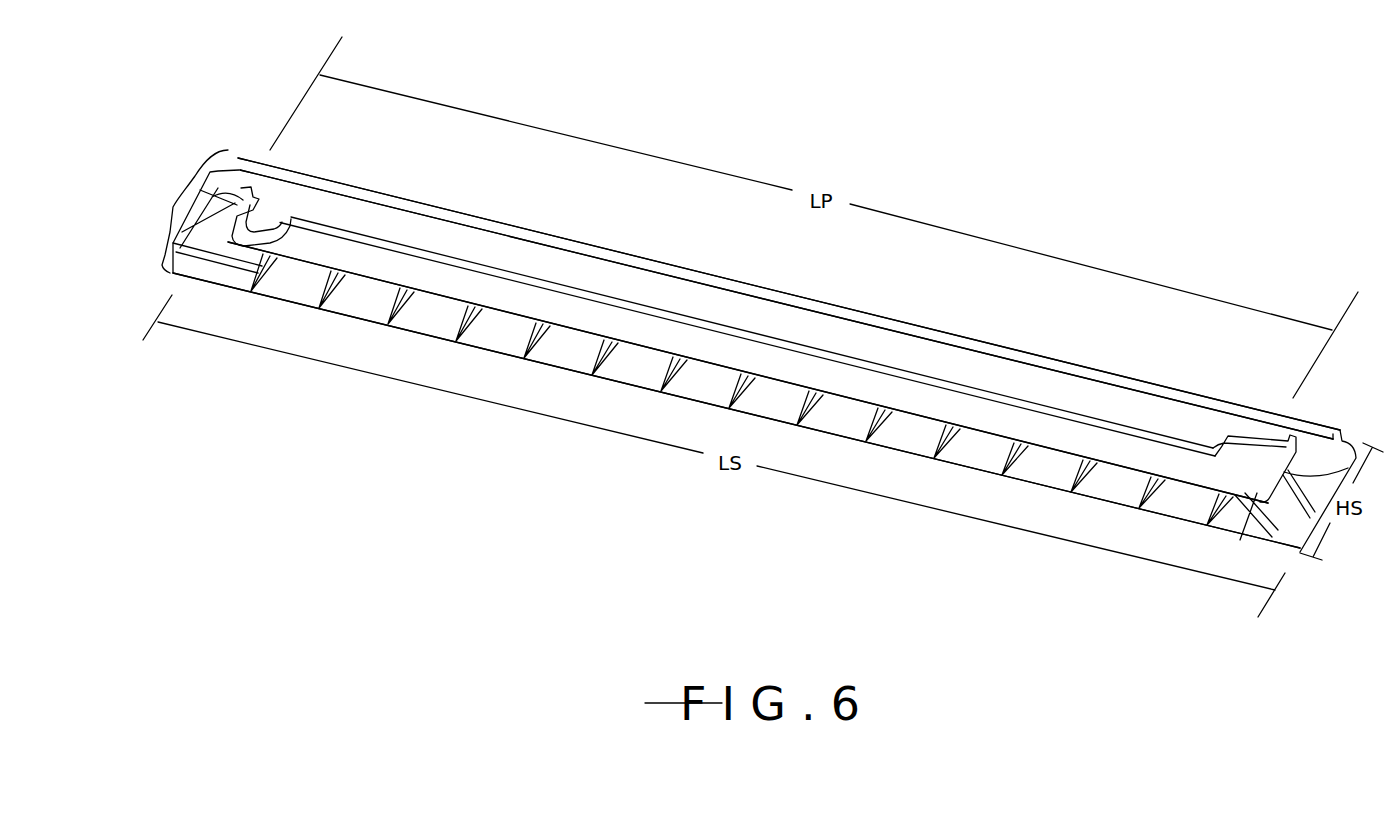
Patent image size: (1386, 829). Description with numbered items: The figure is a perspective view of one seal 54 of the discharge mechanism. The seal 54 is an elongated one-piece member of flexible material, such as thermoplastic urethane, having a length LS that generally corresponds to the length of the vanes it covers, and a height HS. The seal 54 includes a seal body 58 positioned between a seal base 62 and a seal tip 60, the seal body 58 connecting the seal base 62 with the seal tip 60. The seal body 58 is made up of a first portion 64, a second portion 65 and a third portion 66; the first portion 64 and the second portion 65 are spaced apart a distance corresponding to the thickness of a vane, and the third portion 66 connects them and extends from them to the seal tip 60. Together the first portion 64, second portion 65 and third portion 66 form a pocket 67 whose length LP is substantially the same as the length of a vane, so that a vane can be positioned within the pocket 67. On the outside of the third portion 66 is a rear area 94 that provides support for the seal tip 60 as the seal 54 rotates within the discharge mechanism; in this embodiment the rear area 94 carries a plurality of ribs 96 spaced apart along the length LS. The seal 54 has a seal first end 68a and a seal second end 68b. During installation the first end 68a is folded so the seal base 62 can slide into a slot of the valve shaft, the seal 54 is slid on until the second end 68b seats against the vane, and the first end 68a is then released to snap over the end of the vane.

The seal 54 is at (987, 342).
The seal body 58 is at (190, 186).
The seal tip 60 is at (410, 332).
The seal base 62 is at (437, 206).
The first portion 64 is at (270, 206).
The second portion 65 is at (262, 271).
The third portion 66 is at (365, 278).
The pocket 67 is at (593, 297).
The seal first end 68a is at (238, 152).
The seal second end 68b is at (1308, 428).
The rear area 94 is at (973, 453).
The ribs 96 is at (318, 283).